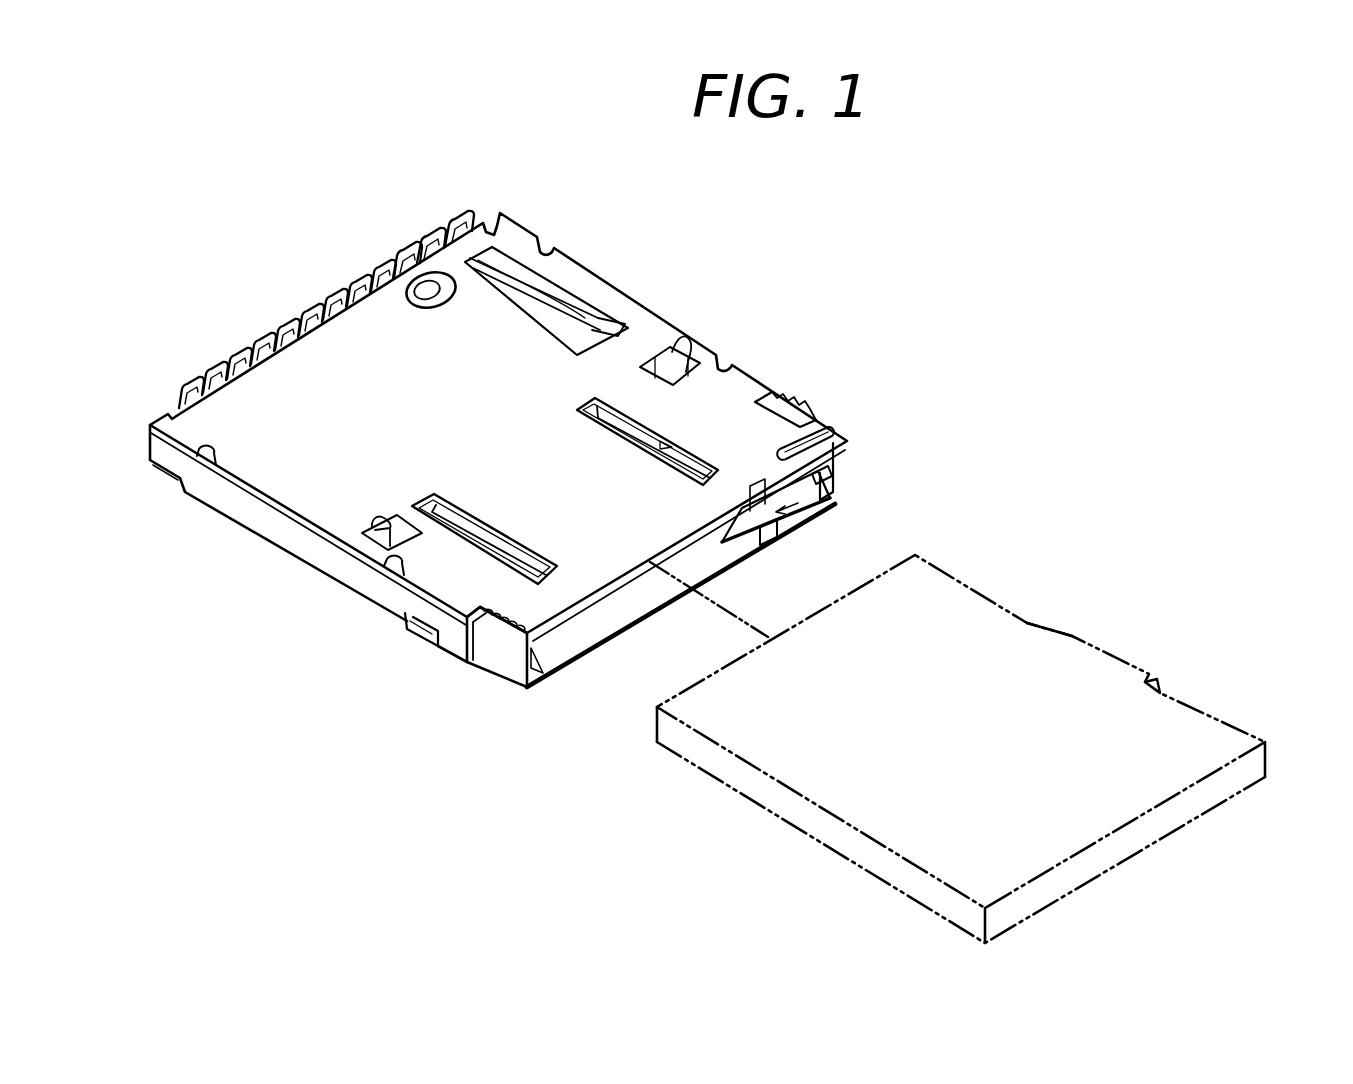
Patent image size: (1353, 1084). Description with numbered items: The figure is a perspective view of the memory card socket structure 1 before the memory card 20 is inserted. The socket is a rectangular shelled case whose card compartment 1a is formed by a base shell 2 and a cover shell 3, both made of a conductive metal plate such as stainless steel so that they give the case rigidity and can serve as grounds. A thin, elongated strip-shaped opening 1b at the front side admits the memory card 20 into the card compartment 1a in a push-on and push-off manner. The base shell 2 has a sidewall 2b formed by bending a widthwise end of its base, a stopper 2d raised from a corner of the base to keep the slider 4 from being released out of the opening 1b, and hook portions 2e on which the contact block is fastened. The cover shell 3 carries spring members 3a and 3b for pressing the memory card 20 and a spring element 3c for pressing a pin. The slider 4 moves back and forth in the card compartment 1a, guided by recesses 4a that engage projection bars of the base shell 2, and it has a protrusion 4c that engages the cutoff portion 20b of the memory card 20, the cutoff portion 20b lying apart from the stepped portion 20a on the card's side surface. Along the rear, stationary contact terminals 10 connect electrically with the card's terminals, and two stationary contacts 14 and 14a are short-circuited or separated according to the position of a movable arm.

The memory card socket structure 1 is at (512, 463).
The card compartment 1a is at (582, 628).
The opening 1b is at (573, 662).
The base shell 2 is at (512, 556).
The sidewall 2b is at (352, 578).
The stopper 2d is at (826, 470).
The hook portion 2e is at (168, 480).
The cover shell 3 is at (498, 396).
The spring member 3a is at (466, 513).
The spring member 3b is at (615, 432).
The spring element 3c is at (550, 325).
The slider 4 is at (809, 522).
The recess 4a is at (778, 537).
The protrusion 4c is at (836, 480).
The contact terminal 10 is at (295, 330).
The stationary contact 14 is at (428, 242).
The stationary contact 14a is at (405, 256).
The memory card 20 is at (961, 725).
The stepped portion 20a is at (1072, 635).
The cutoff portion 20b is at (1163, 692).